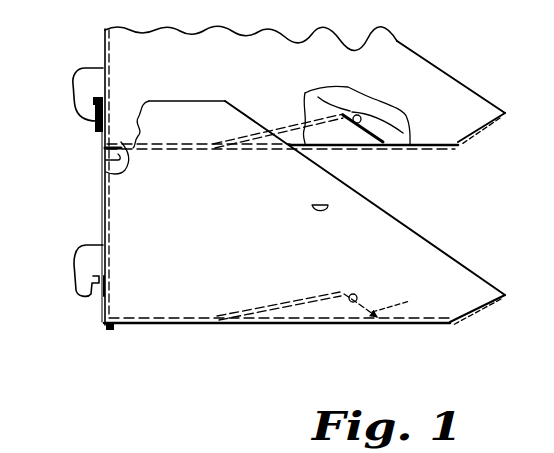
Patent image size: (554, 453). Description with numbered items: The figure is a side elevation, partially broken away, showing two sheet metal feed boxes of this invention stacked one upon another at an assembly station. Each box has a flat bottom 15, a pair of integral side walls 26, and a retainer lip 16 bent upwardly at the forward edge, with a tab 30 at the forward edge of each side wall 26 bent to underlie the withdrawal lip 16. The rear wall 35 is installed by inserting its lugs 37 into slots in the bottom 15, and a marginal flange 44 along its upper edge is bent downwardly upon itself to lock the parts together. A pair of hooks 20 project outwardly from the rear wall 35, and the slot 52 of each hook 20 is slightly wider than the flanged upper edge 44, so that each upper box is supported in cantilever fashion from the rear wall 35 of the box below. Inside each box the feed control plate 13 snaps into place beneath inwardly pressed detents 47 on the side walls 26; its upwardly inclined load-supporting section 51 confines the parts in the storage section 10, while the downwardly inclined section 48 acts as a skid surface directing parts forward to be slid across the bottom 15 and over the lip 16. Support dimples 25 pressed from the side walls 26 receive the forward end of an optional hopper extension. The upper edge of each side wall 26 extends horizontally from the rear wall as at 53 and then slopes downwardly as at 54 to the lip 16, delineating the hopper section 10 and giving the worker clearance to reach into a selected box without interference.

The storage section 10 is at (313, 193).
The feed control plate 13 is at (328, 113).
The bottom 15 is at (403, 148).
The retainer lip 16 is at (457, 143).
The hook 20 is at (83, 76).
The support dimple 25 is at (311, 207).
The side wall 26 is at (418, 72).
The tab 30 is at (503, 122).
The rear wall 35 is at (127, 165).
The lug 37 is at (113, 330).
The marginal flange 44 is at (93, 128).
The detent 47 is at (362, 116).
The downwardly inclined section 48 is at (384, 130).
The load-supporting section 51 is at (317, 96).
The slot 52 is at (100, 289).
The horizontal edge portion 53 is at (204, 100).
The sloping edge 54 is at (410, 42).